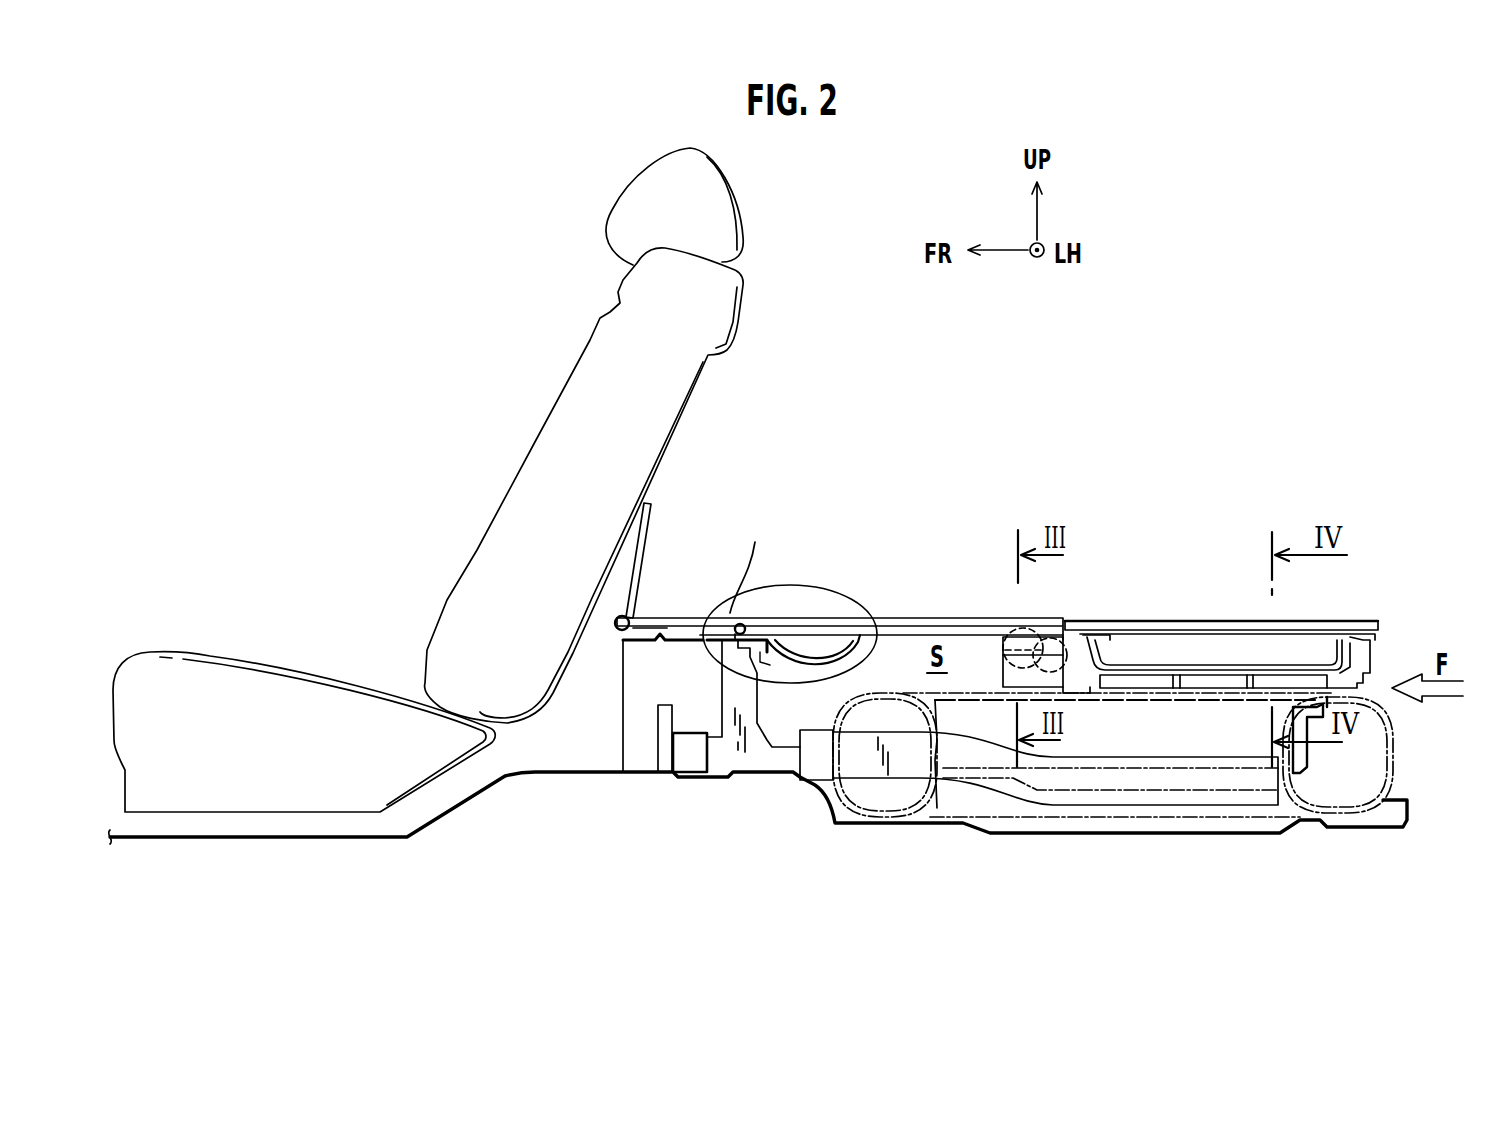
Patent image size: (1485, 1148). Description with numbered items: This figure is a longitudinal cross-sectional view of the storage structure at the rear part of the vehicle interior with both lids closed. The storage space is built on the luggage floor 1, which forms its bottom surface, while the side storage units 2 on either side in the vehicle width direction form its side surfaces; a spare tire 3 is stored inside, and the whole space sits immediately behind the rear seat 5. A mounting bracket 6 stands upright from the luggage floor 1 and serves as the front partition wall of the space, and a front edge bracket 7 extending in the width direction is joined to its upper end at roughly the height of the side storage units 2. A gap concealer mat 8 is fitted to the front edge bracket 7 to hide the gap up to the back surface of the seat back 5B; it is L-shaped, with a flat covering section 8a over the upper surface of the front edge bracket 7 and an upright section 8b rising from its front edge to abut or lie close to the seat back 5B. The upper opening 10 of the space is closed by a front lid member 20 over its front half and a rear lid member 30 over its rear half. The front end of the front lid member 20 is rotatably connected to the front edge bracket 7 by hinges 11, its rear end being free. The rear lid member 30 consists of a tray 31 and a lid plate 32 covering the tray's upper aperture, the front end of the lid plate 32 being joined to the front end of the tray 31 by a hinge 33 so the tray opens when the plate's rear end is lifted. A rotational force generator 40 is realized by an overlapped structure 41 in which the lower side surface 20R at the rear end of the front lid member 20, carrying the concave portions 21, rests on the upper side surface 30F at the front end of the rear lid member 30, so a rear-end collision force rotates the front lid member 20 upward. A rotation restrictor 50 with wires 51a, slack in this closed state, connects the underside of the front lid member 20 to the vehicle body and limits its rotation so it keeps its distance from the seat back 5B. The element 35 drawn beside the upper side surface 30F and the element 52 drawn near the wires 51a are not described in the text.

The luggage floor 1 is at (1170, 823).
The side storage unit 2 is at (1313, 747).
The spare tire 3 is at (1393, 730).
The rear seat 5 is at (323, 532).
The seat back 5B is at (567, 400).
The mounting bracket 6 is at (763, 700).
The front edge bracket 7 is at (643, 650).
The gap concealer mat 8 is at (660, 483).
The covering section 8a is at (687, 613).
The upright section 8b is at (648, 565).
The upper opening 10 is at (910, 635).
The hinge 11 is at (780, 612).
The front lid member 20 is at (884, 595).
The lower side surface 20R is at (1010, 640).
The concave portion 21 is at (1023, 648).
The rear lid member 30 is at (1235, 603).
The upper side surface 30F is at (1048, 640).
The tray 31 is at (1350, 660).
The lid plate 32 is at (1333, 620).
The hinge 33 is at (1040, 660).
The front roller 35 is at (1050, 655).
The rotational force generator 40 is at (1007, 597).
The overlapped structure 41 is at (1220, 452).
The rotation restrictor 50 is at (777, 667).
The wire 51a is at (823, 653).
The guide bracket 52 is at (857, 637).